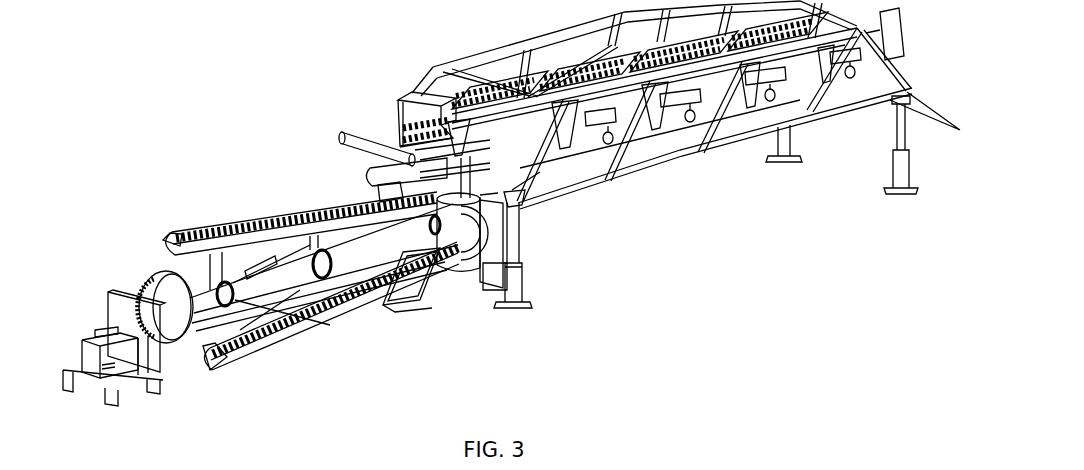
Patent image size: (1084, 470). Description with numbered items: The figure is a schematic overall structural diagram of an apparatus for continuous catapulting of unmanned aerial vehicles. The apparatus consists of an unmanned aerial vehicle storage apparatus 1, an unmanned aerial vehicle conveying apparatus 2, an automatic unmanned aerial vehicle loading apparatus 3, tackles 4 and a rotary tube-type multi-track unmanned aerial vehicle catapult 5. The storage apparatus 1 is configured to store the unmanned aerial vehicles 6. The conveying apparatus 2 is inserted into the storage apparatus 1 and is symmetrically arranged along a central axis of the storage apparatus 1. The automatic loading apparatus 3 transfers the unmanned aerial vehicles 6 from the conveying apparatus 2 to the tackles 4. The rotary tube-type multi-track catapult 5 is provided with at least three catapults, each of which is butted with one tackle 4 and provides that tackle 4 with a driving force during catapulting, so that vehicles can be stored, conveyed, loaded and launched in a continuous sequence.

The unmanned aerial vehicle storage apparatus 1 is at (795, 127).
The unmanned aerial vehicle conveying apparatus 2 is at (405, 112).
The automatic unmanned aerial vehicle loading apparatus 3 is at (520, 197).
The tackles 4 is at (448, 212).
The rotary tube-type multi-track unmanned aerial vehicle catapult 5 is at (212, 243).
The unmanned aerial vehicles 6 is at (353, 132).